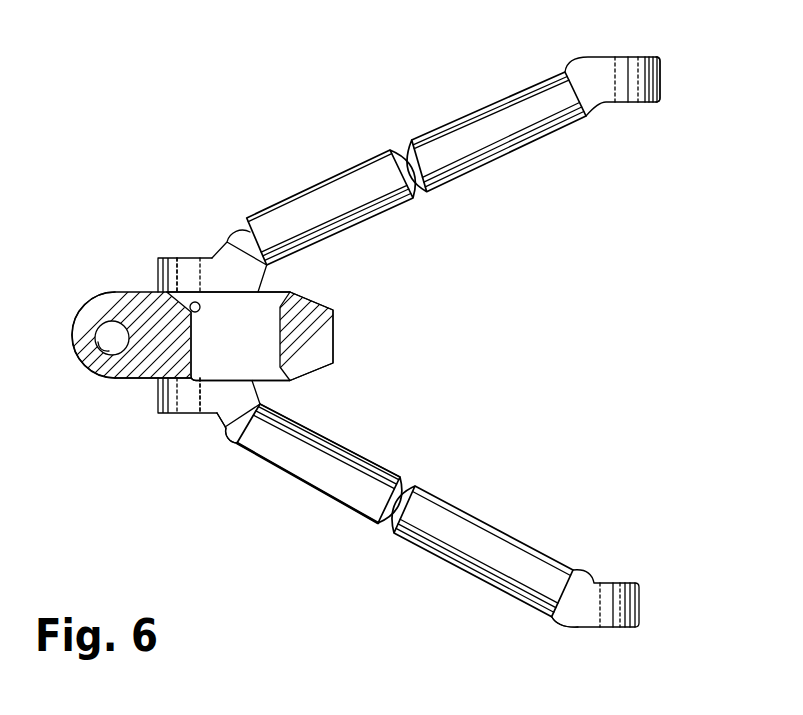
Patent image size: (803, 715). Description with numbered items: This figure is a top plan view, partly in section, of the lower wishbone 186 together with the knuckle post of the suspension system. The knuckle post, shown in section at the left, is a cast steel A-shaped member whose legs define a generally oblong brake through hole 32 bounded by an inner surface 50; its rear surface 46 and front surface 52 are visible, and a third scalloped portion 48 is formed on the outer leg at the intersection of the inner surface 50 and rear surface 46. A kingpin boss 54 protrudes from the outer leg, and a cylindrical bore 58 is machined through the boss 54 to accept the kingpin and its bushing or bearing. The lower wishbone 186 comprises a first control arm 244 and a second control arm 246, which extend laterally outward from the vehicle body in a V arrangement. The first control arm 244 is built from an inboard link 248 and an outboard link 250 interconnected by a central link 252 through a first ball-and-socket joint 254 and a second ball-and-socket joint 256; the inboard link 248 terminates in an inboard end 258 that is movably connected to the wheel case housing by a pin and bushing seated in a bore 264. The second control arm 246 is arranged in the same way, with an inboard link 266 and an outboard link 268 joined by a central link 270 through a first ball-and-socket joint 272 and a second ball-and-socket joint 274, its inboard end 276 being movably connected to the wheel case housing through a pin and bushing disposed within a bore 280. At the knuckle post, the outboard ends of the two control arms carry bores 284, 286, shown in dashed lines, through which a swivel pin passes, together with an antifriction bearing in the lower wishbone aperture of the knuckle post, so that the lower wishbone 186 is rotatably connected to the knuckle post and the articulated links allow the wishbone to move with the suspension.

The brake through hole 32 is at (192, 340).
The rear surface 46 is at (130, 292).
The third scalloped portion 48 is at (187, 306).
The inner surface 50 is at (210, 381).
The front surface 52 is at (336, 367).
The kingpin boss 54 is at (82, 315).
The cylindrical bore 58 is at (100, 361).
The lower wishbone 186 is at (478, 505).
The first control arm 244 is at (522, 153).
The second control arm 246 is at (388, 458).
The inboard link 248 is at (660, 102).
The outboard link 250 is at (202, 258).
The central link 252 is at (297, 195).
The first ball-and-socket joint 254 is at (231, 235).
The second ball-and-socket joint 256 is at (605, 102).
The inboard end 258 is at (662, 72).
The bore 264 is at (650, 56).
The inboard link 266 is at (567, 623).
The outboard link 268 is at (217, 414).
The central link 270 is at (303, 487).
The first ball-and-socket joint 272 is at (238, 423).
The second ball-and-socket joint 274 is at (585, 575).
The inboard end 276 is at (639, 613).
The bore 280 is at (613, 582).
The bore 284 is at (181, 253).
The bore 286 is at (192, 400).